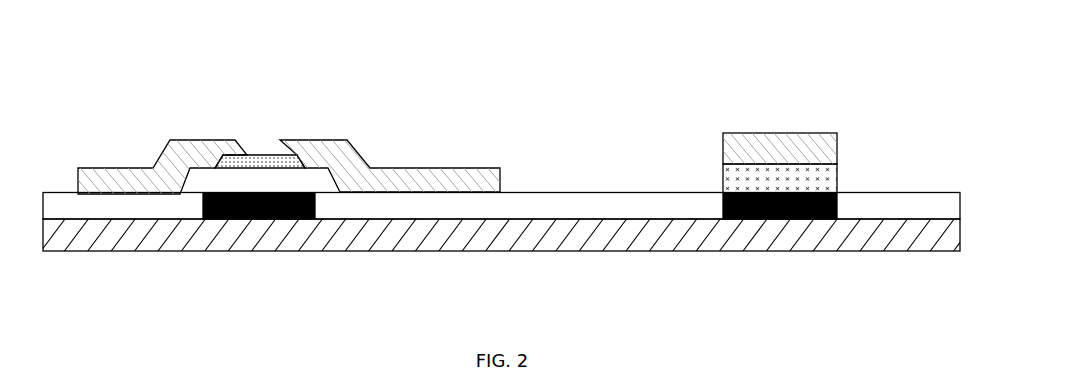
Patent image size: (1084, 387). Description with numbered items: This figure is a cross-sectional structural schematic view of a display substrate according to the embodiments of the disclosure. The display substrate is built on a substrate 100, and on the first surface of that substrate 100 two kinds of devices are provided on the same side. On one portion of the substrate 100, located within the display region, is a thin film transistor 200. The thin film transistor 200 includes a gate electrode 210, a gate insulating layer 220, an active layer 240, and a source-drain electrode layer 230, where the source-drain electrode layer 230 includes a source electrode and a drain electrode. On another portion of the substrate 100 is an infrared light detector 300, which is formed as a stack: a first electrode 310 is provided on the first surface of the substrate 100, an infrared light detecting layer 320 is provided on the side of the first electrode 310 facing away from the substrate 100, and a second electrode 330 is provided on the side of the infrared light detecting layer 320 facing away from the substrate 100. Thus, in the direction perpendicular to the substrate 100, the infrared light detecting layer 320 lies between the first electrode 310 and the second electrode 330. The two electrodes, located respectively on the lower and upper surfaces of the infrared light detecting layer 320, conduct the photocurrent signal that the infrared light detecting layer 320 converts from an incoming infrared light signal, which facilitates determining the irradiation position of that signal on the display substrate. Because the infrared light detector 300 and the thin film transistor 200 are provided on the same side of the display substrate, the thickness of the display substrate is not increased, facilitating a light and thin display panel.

The substrate 100 is at (515, 252).
The thin film transistor 200 is at (198, 85).
The gate electrode 210 is at (243, 193).
The gate insulating layer 220 is at (343, 207).
The source-drain electrode layer 230 is at (203, 139).
The active layer 240 is at (288, 155).
The infrared light detector 300 is at (722, 75).
The first electrode 310 is at (798, 192).
The infrared light detecting layer 320 is at (758, 175).
The second electrode 330 is at (731, 133).